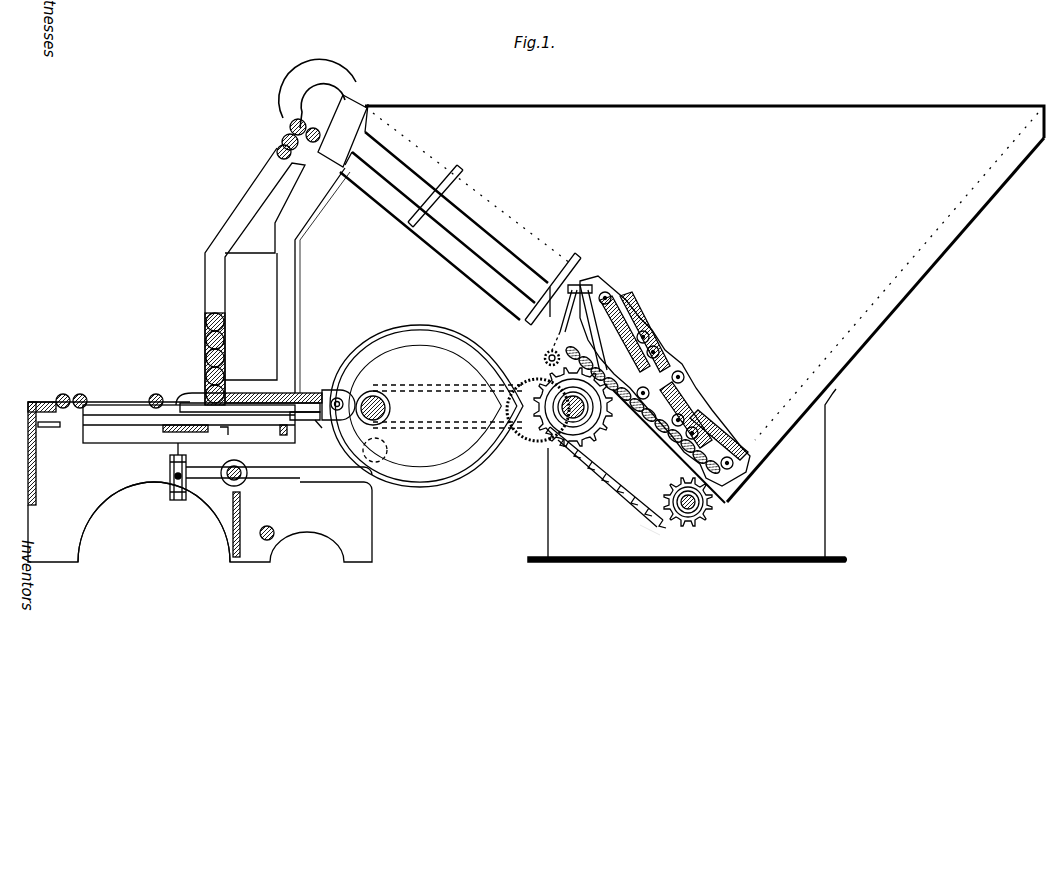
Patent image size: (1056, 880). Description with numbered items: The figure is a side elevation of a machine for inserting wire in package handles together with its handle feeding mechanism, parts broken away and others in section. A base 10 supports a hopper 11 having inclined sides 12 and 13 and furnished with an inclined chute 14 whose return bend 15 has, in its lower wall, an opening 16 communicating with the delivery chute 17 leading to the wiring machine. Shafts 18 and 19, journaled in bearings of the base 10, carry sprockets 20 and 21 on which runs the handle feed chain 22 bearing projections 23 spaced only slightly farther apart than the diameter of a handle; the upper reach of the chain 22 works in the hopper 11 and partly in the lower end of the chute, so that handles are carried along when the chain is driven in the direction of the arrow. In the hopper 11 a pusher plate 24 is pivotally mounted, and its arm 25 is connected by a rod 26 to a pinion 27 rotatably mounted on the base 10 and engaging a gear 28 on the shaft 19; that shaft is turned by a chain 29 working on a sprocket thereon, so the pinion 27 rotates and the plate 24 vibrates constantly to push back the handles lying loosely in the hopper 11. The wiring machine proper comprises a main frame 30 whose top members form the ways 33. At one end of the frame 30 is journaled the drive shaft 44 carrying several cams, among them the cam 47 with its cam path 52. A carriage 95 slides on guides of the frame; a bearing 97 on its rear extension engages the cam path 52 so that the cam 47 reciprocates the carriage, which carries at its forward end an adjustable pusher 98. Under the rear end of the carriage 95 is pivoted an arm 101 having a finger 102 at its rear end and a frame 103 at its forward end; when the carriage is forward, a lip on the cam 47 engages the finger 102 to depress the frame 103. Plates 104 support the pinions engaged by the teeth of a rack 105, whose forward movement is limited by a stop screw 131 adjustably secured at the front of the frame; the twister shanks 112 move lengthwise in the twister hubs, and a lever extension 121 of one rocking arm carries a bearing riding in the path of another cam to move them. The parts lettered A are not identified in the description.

The base 10 is at (826, 501).
The hopper 11 is at (805, 116).
The inclined side 12 is at (892, 321).
The inclined side 13 is at (496, 233).
The inclined chute 14 is at (540, 318).
The return bend 15 is at (312, 73).
The opening 16 is at (290, 127).
The delivery chute 17 is at (238, 219).
The shaft 18 is at (706, 503).
The shaft 19 is at (584, 419).
The sprocket 20 is at (660, 526).
The sprocket 21 is at (591, 401).
The handle feed chain 22 is at (605, 462).
The projections 23 is at (612, 496).
The pusher plate 24 is at (608, 310).
The arm 25 is at (612, 278).
The rod 26 is at (566, 326).
The pinion 27 is at (547, 358).
The gear 28 is at (548, 446).
The chain 29 is at (526, 437).
The main frame 30 is at (83, 513).
The ways 33 is at (45, 402).
The drive shaft 44 is at (386, 413).
The cam 47 is at (458, 480).
The cam path 52 is at (443, 337).
The carriage 95 is at (322, 393).
The bearing 97 is at (348, 396).
The pusher 98 is at (222, 435).
The arm 101 is at (300, 414).
The finger 102 is at (322, 424).
The frame 103 is at (188, 404).
The plates 104 is at (236, 422).
The rack 105 is at (168, 428).
The twister shanks 112 is at (171, 462).
The lever extension 121 is at (287, 479).
The stop screw 131 is at (46, 428).
The rollers A is at (205, 345).